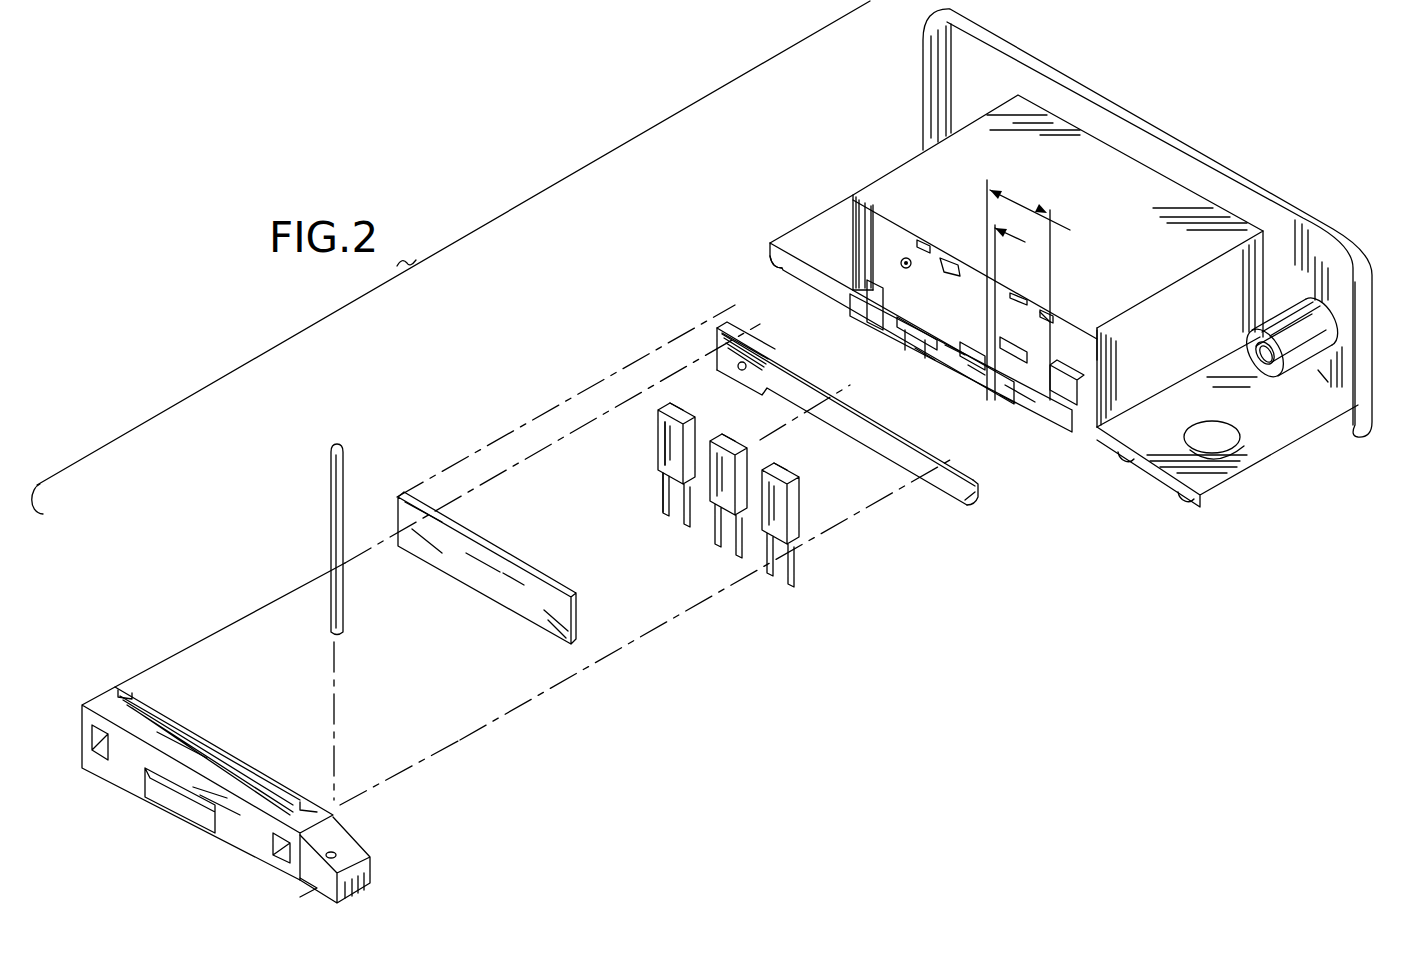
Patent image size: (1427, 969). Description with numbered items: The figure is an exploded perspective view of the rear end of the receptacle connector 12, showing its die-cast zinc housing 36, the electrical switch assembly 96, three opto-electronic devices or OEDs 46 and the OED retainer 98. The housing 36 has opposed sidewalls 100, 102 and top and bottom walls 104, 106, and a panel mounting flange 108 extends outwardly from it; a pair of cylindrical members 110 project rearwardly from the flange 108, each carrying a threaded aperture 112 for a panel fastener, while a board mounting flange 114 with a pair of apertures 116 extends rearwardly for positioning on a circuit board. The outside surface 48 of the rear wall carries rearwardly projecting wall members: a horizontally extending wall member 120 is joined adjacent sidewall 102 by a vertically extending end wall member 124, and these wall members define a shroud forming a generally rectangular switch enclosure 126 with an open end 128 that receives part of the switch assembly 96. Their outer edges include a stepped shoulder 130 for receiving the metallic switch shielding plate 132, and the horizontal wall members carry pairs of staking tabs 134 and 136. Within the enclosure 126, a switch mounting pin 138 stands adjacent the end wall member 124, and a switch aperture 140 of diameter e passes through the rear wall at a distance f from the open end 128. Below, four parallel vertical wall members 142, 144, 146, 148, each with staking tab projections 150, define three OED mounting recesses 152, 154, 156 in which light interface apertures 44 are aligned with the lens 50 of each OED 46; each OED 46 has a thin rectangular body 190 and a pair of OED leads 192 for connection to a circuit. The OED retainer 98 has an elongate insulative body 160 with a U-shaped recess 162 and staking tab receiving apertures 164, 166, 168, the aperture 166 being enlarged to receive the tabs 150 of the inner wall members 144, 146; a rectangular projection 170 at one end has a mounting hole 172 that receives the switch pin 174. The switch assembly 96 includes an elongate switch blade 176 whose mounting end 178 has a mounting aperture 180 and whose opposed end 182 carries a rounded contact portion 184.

The receptacle connector 12 is at (555, 330).
The housing 36 is at (1113, 203).
The light interface apertures 44 is at (863, 267).
The opto-electronic devices (OEDs) 46 is at (800, 524).
The outer surface of rear wall 48 is at (1081, 407).
The lens 50 is at (686, 418).
The electrical switch assembly 96 is at (888, 240).
The OED retainer 98 is at (98, 690).
The housing sidewall 100 is at (1198, 305).
The housing sidewall 102 is at (897, 163).
The top housing wall 104 is at (1020, 190).
The bottom housing wall 106 is at (1082, 432).
The panel mounting flange 108 is at (1366, 304).
The cylindrical members 110 is at (1337, 340).
The threaded aperture 112 is at (1323, 376).
The board mounting flange 114 is at (1300, 416).
The apertures 116 is at (1227, 448).
The horizontally extending wall member 120 is at (903, 256).
The vertically extending end wall member 124 is at (862, 225).
The rectangular enclosure 126 is at (1012, 204).
The open end 128 is at (1100, 352).
The stepped shoulder 130 is at (870, 197).
The switch shielding plate 132 is at (473, 570).
The staking tabs 134 is at (928, 265).
The staking tabs 136 is at (987, 283).
The switch mounting pin 138 is at (940, 277).
The switch aperture 140 is at (1045, 315).
The vertical wall member 142 is at (866, 311).
The vertical wall member 144 is at (902, 350).
The vertical wall member 146 is at (973, 380).
The vertical wall member 148 is at (1020, 400).
The staking tab projections 150 is at (893, 352).
The OED mounting recess 152 is at (907, 323).
The OED mounting recess 154 is at (947, 352).
The OED mounting recess 156 is at (990, 385).
The insulative body 160 is at (125, 777).
The U-shaped recess 162 is at (233, 765).
The staking tab receiving aperture 164 is at (98, 752).
The staking tab receiving aperture 166 is at (193, 812).
The staking tab receiving aperture 168 is at (277, 858).
The rectangular projection 170 is at (360, 877).
The mounting hole 172 is at (335, 854).
The switch pin 174 is at (344, 623).
The switch arm or blade 176 is at (842, 420).
The mounting end 178 is at (718, 353).
The mounting aperture 180 is at (737, 368).
The opposed end 182 is at (978, 494).
The rounded contact portion 184 is at (946, 490).
The OED body 190 is at (669, 453).
The OED leads 192 is at (667, 510).